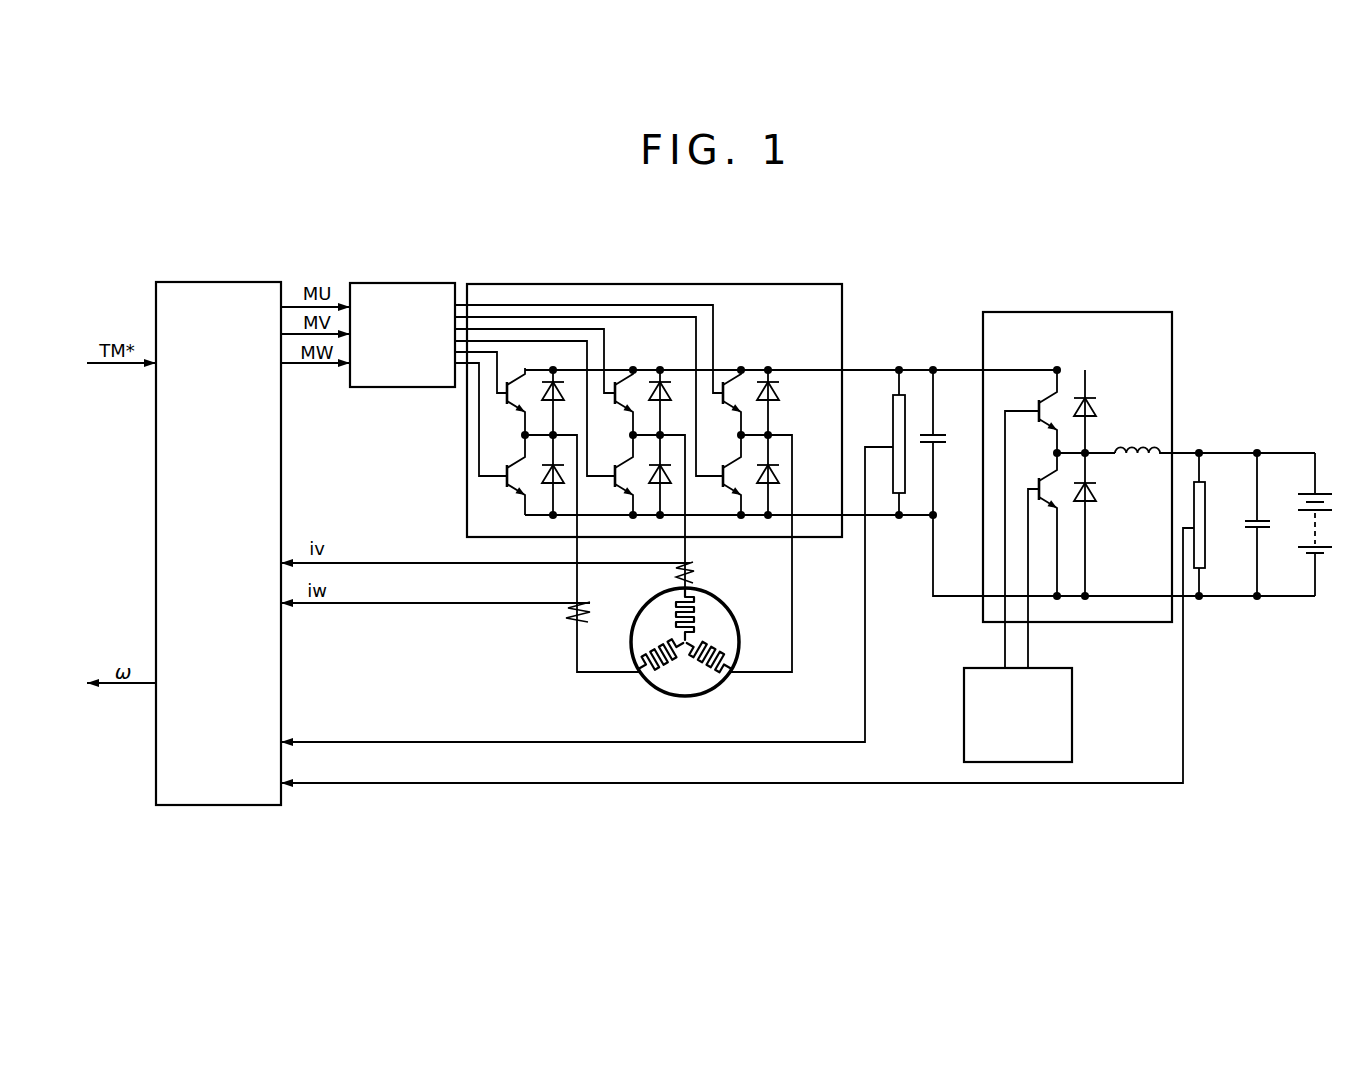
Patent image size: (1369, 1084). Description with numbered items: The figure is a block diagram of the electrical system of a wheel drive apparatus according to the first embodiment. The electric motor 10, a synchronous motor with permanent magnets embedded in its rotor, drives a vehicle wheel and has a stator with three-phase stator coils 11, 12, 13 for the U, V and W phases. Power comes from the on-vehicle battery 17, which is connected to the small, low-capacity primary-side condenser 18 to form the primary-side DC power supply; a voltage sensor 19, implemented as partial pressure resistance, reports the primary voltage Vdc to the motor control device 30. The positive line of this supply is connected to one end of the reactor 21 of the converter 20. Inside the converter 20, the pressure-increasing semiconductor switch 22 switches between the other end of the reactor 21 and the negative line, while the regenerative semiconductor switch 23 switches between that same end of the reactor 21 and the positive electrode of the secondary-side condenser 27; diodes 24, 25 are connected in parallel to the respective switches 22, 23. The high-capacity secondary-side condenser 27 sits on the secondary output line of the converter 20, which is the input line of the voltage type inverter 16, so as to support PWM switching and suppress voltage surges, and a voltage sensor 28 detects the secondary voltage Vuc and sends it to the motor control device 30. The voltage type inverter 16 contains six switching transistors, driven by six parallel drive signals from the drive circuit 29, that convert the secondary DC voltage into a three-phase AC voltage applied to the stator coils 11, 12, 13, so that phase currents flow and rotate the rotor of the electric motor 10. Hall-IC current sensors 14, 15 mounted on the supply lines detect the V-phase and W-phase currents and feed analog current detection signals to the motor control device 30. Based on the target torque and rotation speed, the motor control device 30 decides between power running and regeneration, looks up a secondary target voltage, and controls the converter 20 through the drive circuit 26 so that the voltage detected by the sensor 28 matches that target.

The electric motor 10 is at (728, 608).
The stator coil 11 is at (672, 663).
The stator coil 12 is at (673, 615).
The stator coil 13 is at (710, 645).
The current sensor 14 is at (570, 612).
The current sensor 15 is at (680, 570).
The voltage type inverter 16 is at (787, 283).
The on-vehicle battery 17 is at (1309, 492).
The primary-side condenser 18 is at (1250, 528).
The voltage sensor 19 is at (1210, 493).
The converter 20 is at (1177, 327).
The reactor 21 is at (1137, 440).
The pressure-increasing semiconductor switch 22 is at (1035, 555).
The regenerative semiconductor switch 23 is at (1040, 408).
The diode 24 is at (1095, 500).
The diode 25 is at (1092, 410).
The drive circuit 26 is at (1063, 700).
The secondary-side condenser 27 is at (940, 435).
The voltage sensor 28 is at (890, 427).
The drive circuit 29 is at (390, 282).
The motor control device 30 is at (155, 582).